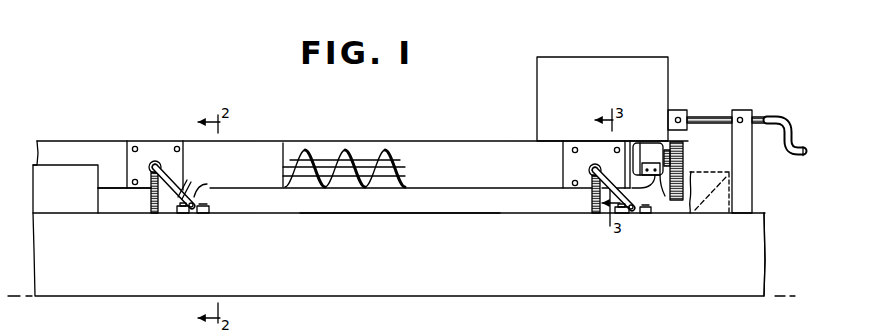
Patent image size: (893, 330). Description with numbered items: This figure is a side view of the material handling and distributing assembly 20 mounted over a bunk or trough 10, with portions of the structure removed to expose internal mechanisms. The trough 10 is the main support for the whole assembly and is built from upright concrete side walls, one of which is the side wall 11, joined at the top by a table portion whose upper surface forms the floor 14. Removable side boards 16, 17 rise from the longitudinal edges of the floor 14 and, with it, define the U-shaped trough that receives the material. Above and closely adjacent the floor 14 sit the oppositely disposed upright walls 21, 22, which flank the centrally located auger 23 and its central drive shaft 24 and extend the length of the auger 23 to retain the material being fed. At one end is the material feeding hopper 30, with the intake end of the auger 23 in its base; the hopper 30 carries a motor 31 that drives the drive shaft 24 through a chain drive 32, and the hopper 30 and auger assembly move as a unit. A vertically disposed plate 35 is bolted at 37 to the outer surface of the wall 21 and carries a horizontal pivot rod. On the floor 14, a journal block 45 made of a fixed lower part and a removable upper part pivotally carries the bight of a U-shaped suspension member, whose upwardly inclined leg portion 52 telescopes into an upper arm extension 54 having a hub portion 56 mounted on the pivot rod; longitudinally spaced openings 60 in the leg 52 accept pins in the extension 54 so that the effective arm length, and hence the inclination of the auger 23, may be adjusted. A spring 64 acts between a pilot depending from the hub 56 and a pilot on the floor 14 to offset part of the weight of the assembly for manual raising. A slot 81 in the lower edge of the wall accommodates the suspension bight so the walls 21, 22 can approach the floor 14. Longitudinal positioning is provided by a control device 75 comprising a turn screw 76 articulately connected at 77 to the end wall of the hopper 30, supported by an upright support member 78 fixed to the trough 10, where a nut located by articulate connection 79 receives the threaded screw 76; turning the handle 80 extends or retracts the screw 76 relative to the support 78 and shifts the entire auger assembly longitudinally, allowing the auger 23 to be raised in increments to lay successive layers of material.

The bunk or trough 10 is at (82, 298).
The upright concrete side wall 11 is at (346, 257).
The upper surface of the table portion (floor) 14 is at (380, 212).
The removable side board 16 is at (66, 195).
The removable side board 17 is at (122, 205).
The material handling and distributing assembly 20 is at (678, 68).
The upright wall 21 is at (271, 147).
The upright wall 22 is at (372, 148).
The auger 23 is at (346, 147).
The central drive shaft 24 is at (680, 172).
The material feeding hopper 30 is at (624, 75).
The motor 31 is at (648, 150).
The chain drive 32 is at (680, 142).
The vertically disposed plate 35 is at (152, 140).
The bolt 37 is at (135, 145).
The journal block 45 is at (211, 207).
The leg portion (arm) 52 is at (182, 213).
The upper arm extension 54 is at (177, 176).
The hub portion 56 is at (158, 161).
The opening 60 is at (185, 196).
The spring 64 is at (164, 214).
The control device 75 is at (760, 114).
The turn screw 76 is at (717, 116).
The articulate connection 77 is at (679, 114).
The upright support member 78 is at (743, 160).
The articulate connection 79 is at (741, 115).
The handle 80 is at (788, 145).
The slot 81 is at (207, 184).